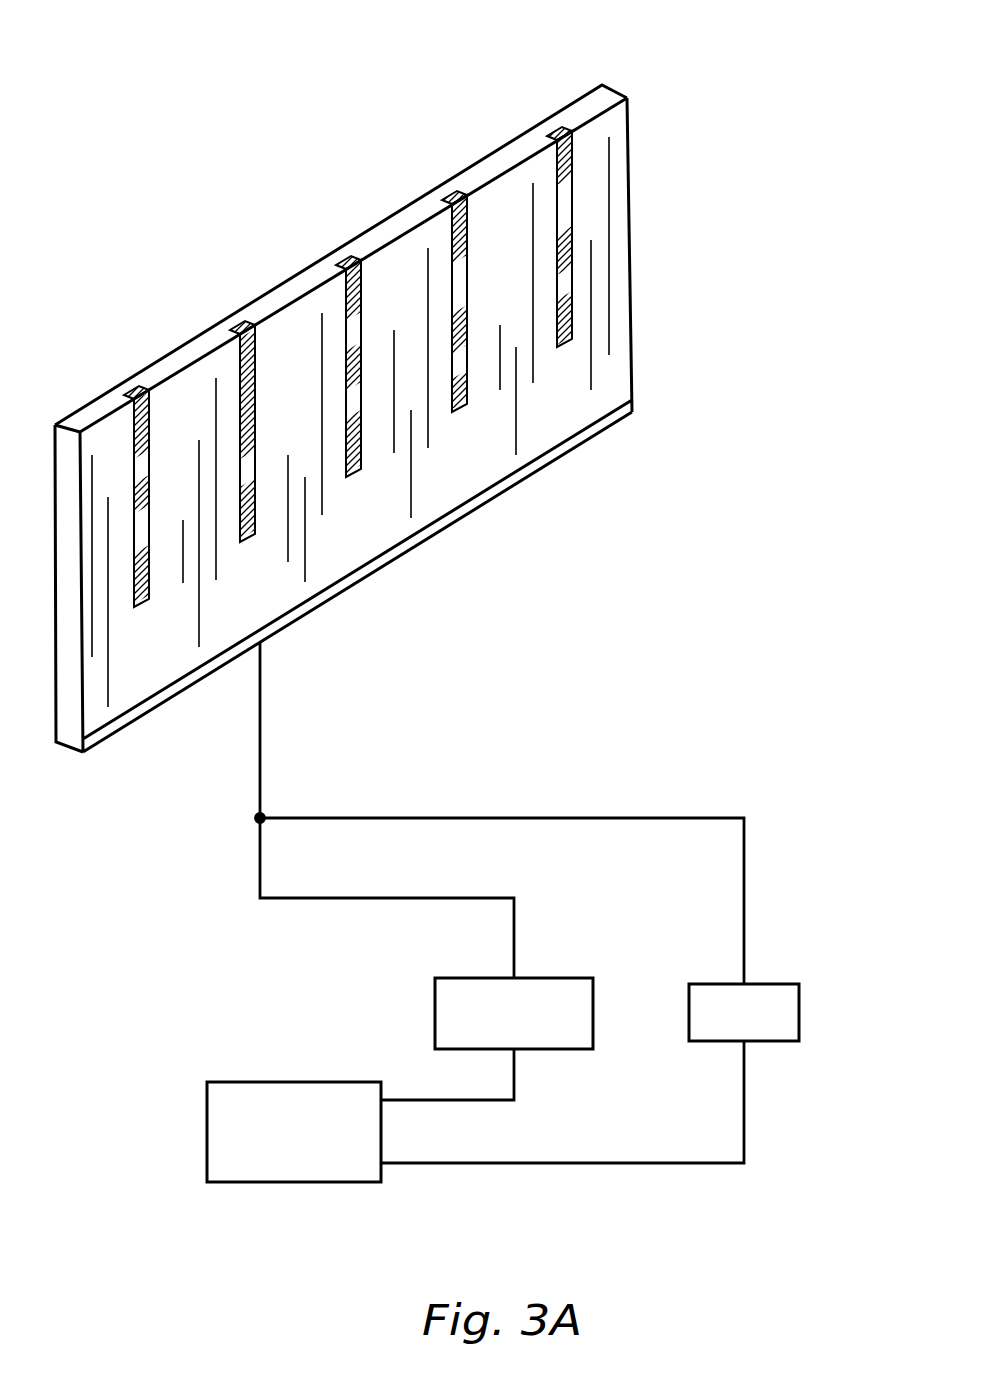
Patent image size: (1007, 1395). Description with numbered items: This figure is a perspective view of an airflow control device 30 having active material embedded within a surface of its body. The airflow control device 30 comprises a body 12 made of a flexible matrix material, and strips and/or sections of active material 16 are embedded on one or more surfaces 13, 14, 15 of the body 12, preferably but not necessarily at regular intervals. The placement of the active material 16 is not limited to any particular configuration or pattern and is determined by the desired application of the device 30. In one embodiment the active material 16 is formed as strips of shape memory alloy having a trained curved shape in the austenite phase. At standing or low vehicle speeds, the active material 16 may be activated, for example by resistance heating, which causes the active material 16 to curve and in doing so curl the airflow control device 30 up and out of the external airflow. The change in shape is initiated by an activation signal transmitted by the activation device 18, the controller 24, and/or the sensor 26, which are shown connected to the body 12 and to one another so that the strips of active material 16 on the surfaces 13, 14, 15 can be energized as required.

The airflow control device 30 is at (306, 150).
The body 12 is at (178, 348).
The surface 13 is at (573, 102).
The surface 14 is at (497, 158).
The surface 15 is at (402, 445).
The active material 16 is at (563, 347).
The activation device 18 is at (552, 977).
The controller 24 is at (272, 1080).
The sensor 26 is at (800, 1002).